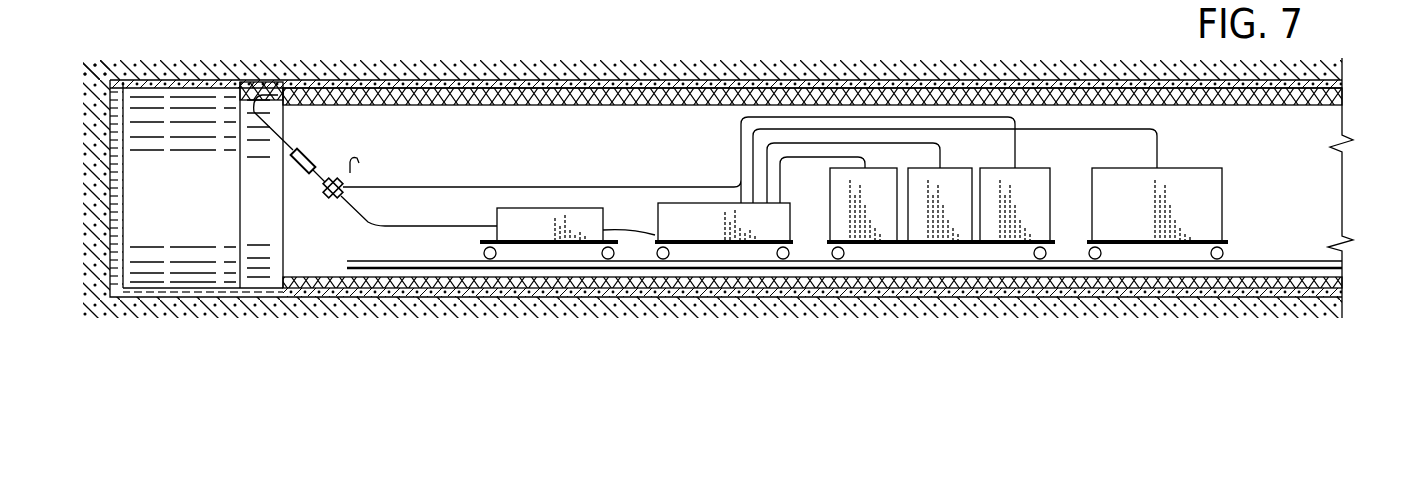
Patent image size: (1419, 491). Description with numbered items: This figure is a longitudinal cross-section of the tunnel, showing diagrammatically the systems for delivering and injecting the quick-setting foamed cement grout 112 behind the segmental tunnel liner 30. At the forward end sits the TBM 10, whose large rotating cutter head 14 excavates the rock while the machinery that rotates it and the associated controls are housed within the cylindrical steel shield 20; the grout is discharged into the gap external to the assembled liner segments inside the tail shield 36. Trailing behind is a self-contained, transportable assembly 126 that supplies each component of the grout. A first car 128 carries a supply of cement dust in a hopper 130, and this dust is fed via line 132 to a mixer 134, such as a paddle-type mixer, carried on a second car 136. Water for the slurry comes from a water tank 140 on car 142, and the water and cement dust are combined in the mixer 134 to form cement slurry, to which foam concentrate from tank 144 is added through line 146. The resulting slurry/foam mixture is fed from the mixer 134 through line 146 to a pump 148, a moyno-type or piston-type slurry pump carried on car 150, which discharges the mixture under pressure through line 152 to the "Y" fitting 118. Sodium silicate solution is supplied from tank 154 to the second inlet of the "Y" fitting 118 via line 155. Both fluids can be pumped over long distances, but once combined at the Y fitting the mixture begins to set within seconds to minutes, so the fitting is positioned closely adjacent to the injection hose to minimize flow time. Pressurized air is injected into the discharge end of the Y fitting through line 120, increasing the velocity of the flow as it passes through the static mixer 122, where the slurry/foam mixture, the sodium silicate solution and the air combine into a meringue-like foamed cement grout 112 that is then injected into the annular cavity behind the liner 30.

The tunnel boring machine 10 is at (157, 70).
The rotating cutter head 14 is at (117, 187).
The cylindrical steel shield 20 is at (198, 190).
The segmental tunnel liner 30 is at (1263, 111).
The tail shield 36 is at (252, 82).
The quick-setting foamed cement grout 112 is at (1340, 88).
The "Y" fitting 118 is at (327, 194).
The pressurized air line 120 is at (350, 173).
The static mixer 122 is at (313, 158).
The self-contained transportable assembly 126 is at (1213, 205).
The first car 128 is at (1228, 242).
The hopper 130 is at (1147, 210).
The cement dust line 132 is at (1160, 153).
The mixer 134 is at (693, 232).
The second car 136 is at (728, 232).
The water tank 140 is at (875, 230).
The car 142 is at (1060, 242).
The foam concentrate tank 144 is at (955, 230).
The line 146 is at (941, 155).
The pump 148 is at (527, 228).
The car 150 is at (558, 228).
The pump discharge line 152 is at (413, 223).
The sodium silicate tank 154 is at (1017, 230).
The sodium silicate line 155 is at (610, 186).